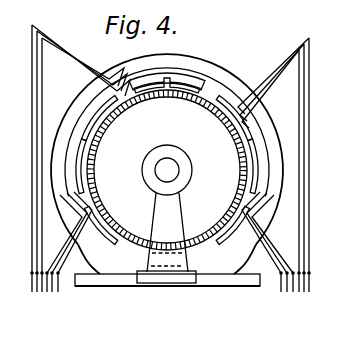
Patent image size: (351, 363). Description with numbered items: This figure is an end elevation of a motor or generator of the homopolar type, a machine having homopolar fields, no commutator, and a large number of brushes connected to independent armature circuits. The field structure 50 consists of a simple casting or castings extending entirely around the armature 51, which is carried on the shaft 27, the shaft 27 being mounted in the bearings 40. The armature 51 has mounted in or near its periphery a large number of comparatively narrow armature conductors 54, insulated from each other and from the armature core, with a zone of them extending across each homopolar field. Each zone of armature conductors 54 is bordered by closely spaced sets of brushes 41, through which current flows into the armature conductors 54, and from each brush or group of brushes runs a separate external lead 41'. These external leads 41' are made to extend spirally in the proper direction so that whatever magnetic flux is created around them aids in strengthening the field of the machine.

The shaft 27 is at (183, 182).
The bearings 40 is at (153, 181).
The brushes 41 is at (198, 164).
The external lead 41' is at (184, 177).
The field structure 50 is at (225, 75).
The armature 51 is at (183, 160).
The armature conductors 54 is at (167, 92).